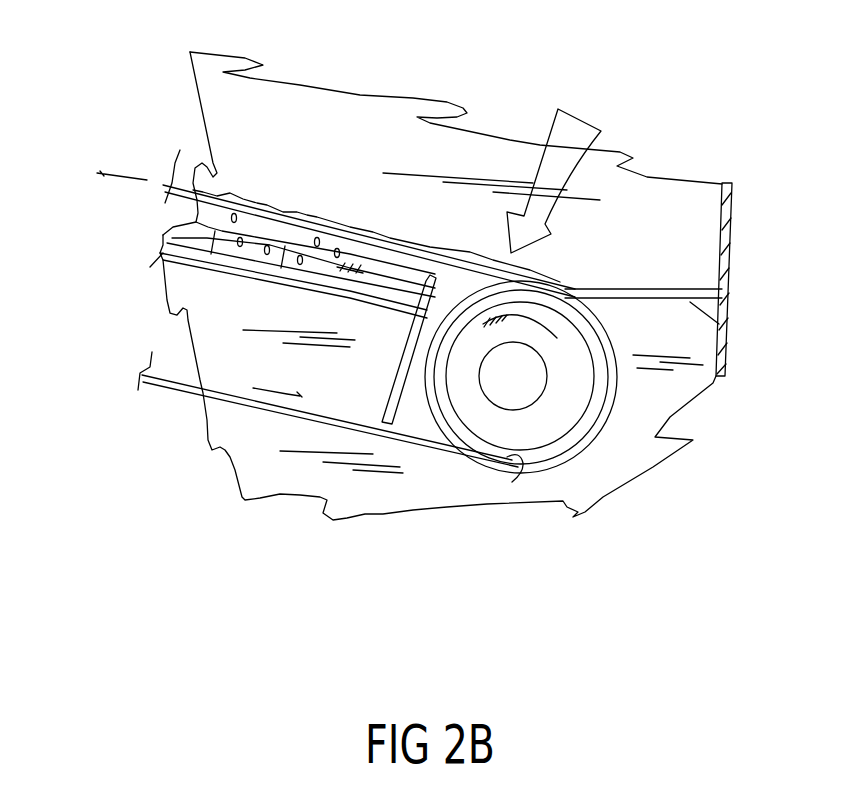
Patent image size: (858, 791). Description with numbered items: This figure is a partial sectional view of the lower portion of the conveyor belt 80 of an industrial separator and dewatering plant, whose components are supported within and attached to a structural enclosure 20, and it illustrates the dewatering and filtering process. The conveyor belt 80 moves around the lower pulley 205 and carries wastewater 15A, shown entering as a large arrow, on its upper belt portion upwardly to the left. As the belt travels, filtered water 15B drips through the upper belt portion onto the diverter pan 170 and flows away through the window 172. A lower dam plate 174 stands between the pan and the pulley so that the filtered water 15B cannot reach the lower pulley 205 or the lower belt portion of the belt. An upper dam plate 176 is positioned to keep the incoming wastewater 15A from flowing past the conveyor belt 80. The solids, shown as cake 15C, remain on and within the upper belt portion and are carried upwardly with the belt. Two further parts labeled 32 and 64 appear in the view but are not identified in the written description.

The structural enclosure 20 is at (373, 112).
The wastewater 15A is at (588, 133).
The cake 15C is at (251, 204).
The mounting frame 32 is at (267, 205).
The filtered water 15B is at (163, 233).
The window 172 is at (367, 267).
The upper dam plate 176 is at (660, 288).
The diverter pan 170 is at (255, 282).
The support strut 64 is at (280, 414).
The lower dam plate 174 is at (396, 406).
The lower pulley 205 is at (512, 482).
The conveyor belt 80 is at (585, 440).